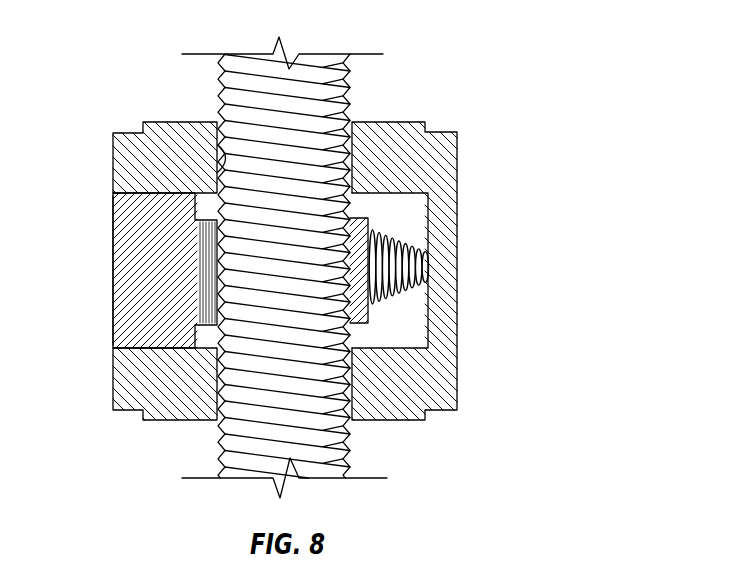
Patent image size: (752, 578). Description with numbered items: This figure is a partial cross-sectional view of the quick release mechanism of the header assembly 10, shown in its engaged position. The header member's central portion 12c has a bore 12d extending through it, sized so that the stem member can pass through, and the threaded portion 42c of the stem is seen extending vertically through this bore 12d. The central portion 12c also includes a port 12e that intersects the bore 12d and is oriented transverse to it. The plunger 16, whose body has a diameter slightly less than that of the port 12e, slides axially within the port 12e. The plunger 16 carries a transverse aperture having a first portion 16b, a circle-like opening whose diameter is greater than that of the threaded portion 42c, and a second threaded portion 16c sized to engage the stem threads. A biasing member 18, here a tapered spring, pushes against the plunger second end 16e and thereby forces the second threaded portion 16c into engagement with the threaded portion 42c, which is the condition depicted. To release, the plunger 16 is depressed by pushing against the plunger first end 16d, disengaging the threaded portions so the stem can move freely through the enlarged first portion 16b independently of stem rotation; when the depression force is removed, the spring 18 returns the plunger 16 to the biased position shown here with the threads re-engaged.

The header assembly 10 is at (443, 175).
The central portion 12c is at (127, 133).
The bore 12d is at (214, 122).
The port 12e is at (413, 348).
The threaded portion 42c is at (351, 97).
The plunger 16 is at (146, 232).
The first portion 16b is at (200, 287).
The second threaded portion 16c is at (347, 325).
The plunger first end 16d is at (122, 286).
The plunger second end 16e is at (366, 323).
The biasing member 18 is at (408, 250).